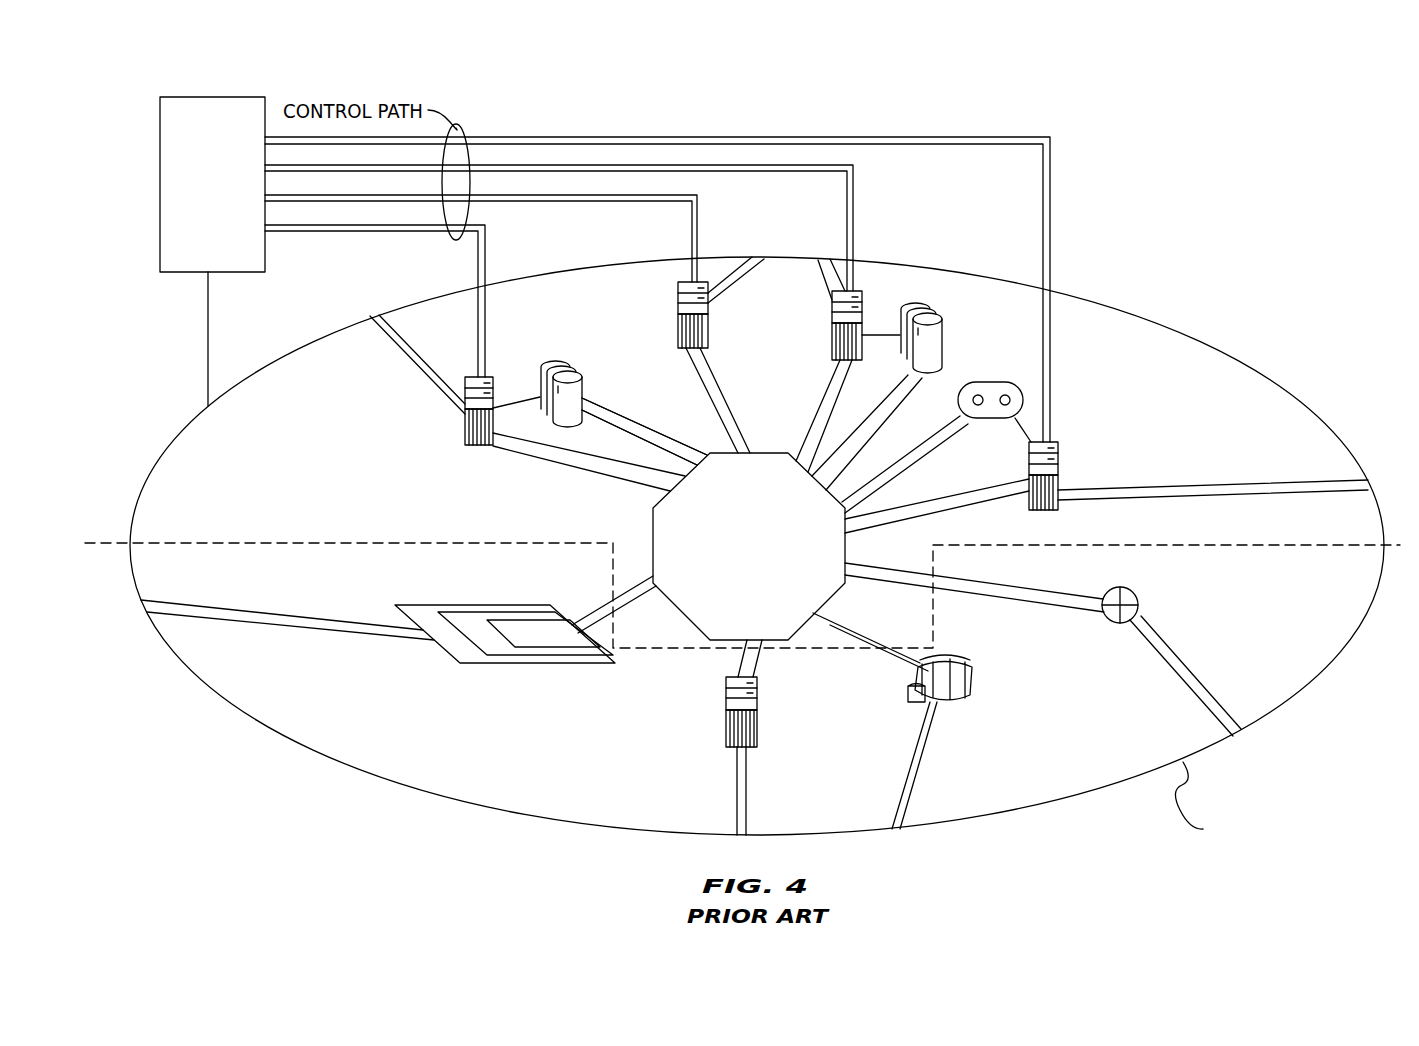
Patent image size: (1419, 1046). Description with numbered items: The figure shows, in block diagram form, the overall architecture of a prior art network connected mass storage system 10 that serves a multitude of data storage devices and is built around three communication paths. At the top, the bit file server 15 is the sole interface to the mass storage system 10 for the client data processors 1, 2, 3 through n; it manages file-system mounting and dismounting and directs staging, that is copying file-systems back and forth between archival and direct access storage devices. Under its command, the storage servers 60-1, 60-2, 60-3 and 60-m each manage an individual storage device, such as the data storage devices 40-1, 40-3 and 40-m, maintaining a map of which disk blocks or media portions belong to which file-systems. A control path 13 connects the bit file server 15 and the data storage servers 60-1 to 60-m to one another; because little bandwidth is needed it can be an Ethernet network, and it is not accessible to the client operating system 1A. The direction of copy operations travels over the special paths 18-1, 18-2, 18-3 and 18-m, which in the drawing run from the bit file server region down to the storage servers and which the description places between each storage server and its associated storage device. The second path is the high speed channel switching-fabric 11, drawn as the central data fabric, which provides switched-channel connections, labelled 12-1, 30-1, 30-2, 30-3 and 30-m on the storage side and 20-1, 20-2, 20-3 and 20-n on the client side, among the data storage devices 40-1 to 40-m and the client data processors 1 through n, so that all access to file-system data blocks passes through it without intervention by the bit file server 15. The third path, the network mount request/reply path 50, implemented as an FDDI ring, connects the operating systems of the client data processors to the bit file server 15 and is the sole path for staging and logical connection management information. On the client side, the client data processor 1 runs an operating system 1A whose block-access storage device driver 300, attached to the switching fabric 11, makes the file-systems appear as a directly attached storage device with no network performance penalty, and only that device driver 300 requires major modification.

The mass storage system 10 is at (742, 525).
The channel switching-fabric 11 is at (653, 515).
The bit file server 15 is at (228, 97).
The control path 13 is at (455, 240).
The special path 18-1 is at (366, 232).
The special path 18-2 is at (587, 202).
The special path 18-3 is at (792, 172).
The special path 18-m is at (720, 137).
The storage server 60-1 is at (464, 436).
The storage server 60-2 is at (677, 290).
The storage server 60-3 is at (832, 310).
The storage server 60-m is at (1060, 455).
The data storage device 40-1 is at (557, 362).
The data storage device 40-3 is at (932, 310).
The data storage device 40-m is at (977, 382).
The data path 12-1 is at (697, 366).
The data path 30-1 is at (569, 458).
The data path 30-2 is at (651, 431).
The data path 30-3 is at (828, 375).
The data path 30-m is at (927, 507).
The client data processor 1 is at (389, 636).
The client operating system 1A is at (494, 648).
The block-access storage device driver 300 is at (560, 638).
The request path 20-1 is at (596, 605).
The request path 20-2 is at (758, 660).
The request path 20-3 is at (877, 634).
The request path 20-n is at (1000, 584).
The client data processor 2 is at (725, 705).
The client data processor 3 is at (967, 665).
The client data processor n is at (1140, 594).
The network mount request/reply path 50 is at (223, 700).